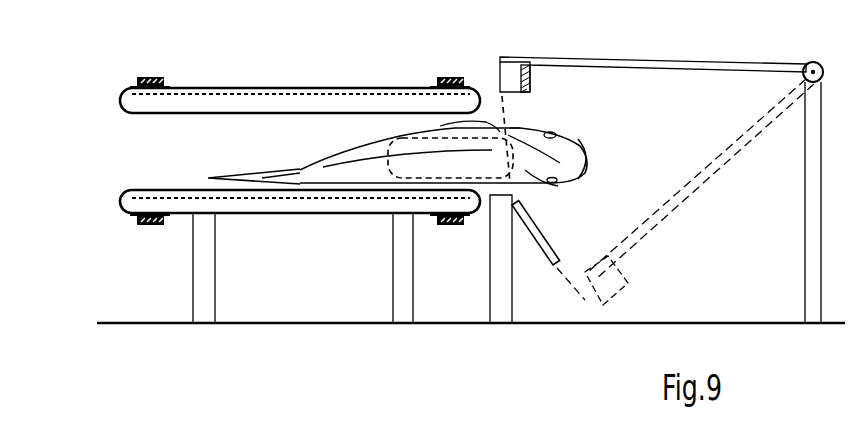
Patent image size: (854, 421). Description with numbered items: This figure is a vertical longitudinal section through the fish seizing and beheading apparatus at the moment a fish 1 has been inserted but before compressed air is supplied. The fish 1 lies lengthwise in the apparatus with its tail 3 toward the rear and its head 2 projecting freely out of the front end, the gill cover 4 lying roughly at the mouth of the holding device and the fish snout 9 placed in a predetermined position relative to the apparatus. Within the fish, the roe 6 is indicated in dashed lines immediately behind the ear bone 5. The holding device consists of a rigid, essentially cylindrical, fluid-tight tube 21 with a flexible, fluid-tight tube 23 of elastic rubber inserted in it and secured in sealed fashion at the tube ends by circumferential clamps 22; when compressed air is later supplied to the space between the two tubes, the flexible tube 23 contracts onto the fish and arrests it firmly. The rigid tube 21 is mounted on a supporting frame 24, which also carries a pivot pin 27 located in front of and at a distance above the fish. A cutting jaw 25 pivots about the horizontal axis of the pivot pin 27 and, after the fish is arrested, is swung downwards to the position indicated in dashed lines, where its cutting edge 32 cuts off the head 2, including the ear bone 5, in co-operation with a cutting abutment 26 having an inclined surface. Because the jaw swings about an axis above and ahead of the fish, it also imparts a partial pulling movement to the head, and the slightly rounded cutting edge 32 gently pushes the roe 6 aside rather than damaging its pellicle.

The fish 1 is at (308, 160).
The head 2 is at (586, 136).
The tail 3 is at (228, 176).
The gill cover 4 is at (528, 133).
The ear bone 5 is at (512, 130).
The roe 6 is at (410, 136).
The fish snout 9 is at (591, 159).
The rigid tube 21 is at (268, 87).
The circumferential clamps 22 is at (150, 76).
The flexible tube 23 is at (166, 189).
The supporting frame 24 is at (290, 321).
The cutting jaw 25 is at (660, 72).
The cutting abutment 26 is at (545, 247).
The pivot pin 27 is at (806, 64).
The cutting edge 32 is at (498, 87).